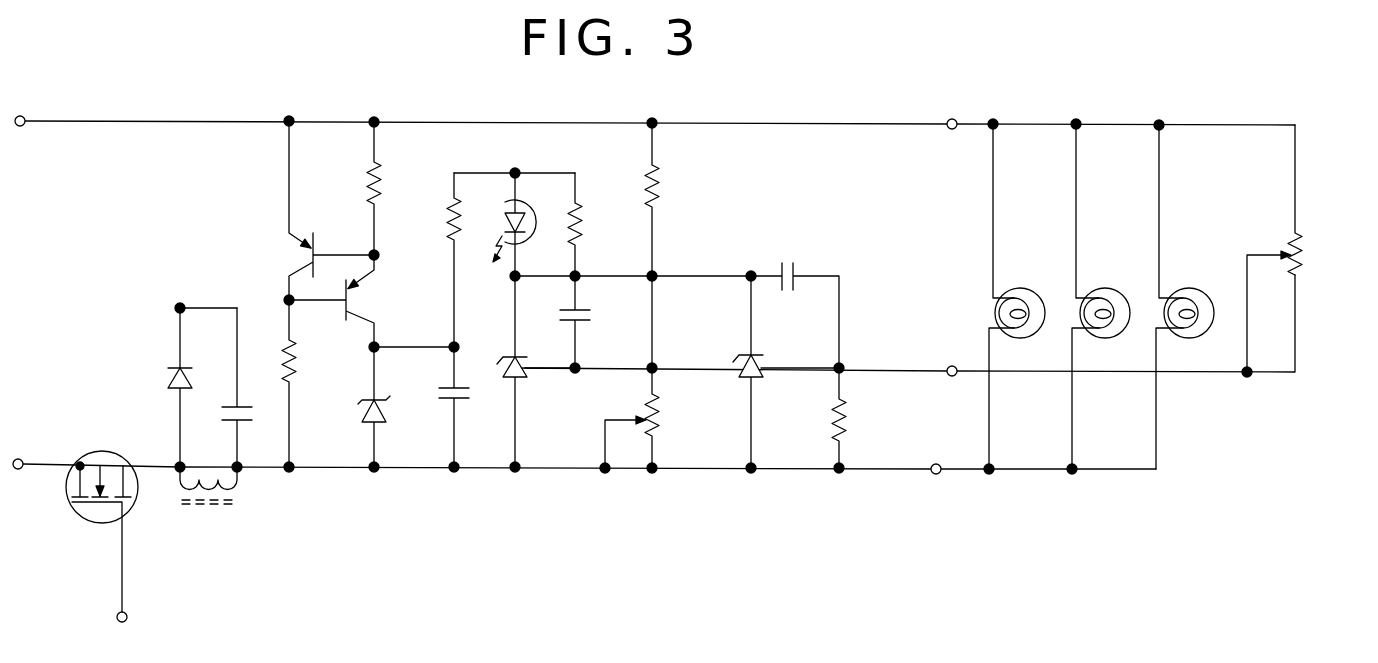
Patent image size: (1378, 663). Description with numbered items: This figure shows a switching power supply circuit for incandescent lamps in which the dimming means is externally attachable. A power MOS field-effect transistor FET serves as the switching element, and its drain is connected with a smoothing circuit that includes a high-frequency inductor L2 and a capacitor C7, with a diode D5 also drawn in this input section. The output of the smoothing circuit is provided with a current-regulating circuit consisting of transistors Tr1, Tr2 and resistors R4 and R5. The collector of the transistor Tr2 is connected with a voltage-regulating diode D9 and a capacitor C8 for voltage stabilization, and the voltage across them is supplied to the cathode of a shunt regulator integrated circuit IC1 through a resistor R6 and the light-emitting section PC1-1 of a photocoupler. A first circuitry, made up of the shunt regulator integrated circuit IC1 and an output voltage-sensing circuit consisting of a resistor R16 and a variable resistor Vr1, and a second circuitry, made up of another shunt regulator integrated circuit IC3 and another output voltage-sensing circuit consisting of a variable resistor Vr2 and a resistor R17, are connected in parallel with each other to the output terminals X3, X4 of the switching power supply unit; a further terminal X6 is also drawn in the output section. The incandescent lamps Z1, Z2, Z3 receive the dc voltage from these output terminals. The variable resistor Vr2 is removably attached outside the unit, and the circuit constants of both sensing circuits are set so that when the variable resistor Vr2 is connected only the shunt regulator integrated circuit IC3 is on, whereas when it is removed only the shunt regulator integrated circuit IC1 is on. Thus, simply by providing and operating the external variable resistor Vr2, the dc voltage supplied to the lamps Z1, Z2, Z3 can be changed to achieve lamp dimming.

The power MOS field-effect transistor FET is at (102, 517).
The diode D5 is at (178, 385).
The capacitor C7 is at (224, 390).
The high-frequency inductor L2 is at (206, 507).
The transistor Tr1 is at (301, 210).
The transistor Tr2 is at (356, 303).
The resistor R4 is at (350, 188).
The resistor R5 is at (308, 386).
The resistor R6 is at (430, 262).
The voltage-regulating diode D9 is at (388, 409).
The capacitor C8 is at (462, 409).
The light-emitting section of photocoupler PC1-1 is at (515, 173).
The shunt regulator integrated circuit IC1 is at (530, 327).
The resistor R16 is at (686, 199).
The shunt regulator integrated circuit IC3 is at (792, 388).
The variable resistor Vr1 is at (658, 374).
The resistor R17 is at (867, 418).
The output terminal X3 is at (950, 108).
The terminal X6 is at (950, 355).
The output terminal X4 is at (933, 493).
The incandescent lamp Z1 is at (1016, 296).
The incandescent lamp Z2 is at (1098, 296).
The incandescent lamp Z3 is at (1184, 294).
The variable resistor Vr2 is at (1300, 251).